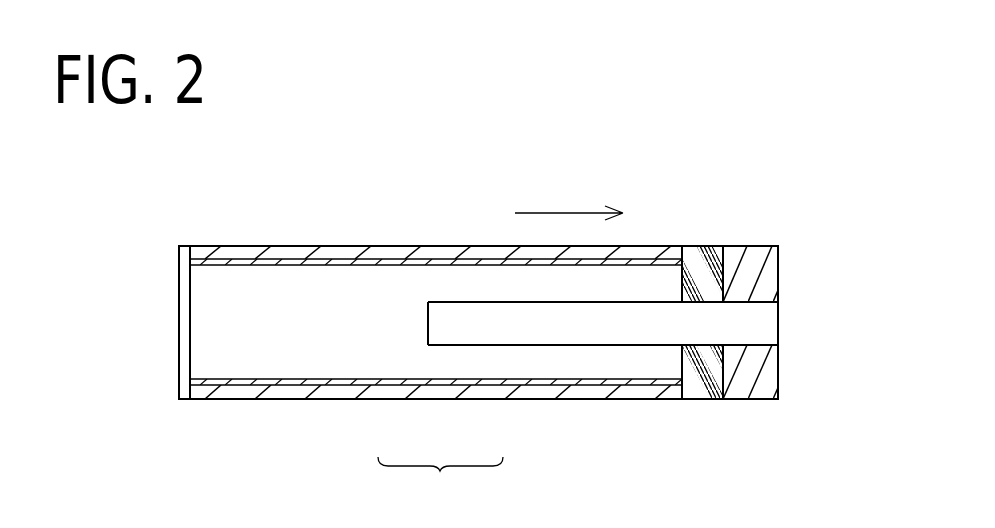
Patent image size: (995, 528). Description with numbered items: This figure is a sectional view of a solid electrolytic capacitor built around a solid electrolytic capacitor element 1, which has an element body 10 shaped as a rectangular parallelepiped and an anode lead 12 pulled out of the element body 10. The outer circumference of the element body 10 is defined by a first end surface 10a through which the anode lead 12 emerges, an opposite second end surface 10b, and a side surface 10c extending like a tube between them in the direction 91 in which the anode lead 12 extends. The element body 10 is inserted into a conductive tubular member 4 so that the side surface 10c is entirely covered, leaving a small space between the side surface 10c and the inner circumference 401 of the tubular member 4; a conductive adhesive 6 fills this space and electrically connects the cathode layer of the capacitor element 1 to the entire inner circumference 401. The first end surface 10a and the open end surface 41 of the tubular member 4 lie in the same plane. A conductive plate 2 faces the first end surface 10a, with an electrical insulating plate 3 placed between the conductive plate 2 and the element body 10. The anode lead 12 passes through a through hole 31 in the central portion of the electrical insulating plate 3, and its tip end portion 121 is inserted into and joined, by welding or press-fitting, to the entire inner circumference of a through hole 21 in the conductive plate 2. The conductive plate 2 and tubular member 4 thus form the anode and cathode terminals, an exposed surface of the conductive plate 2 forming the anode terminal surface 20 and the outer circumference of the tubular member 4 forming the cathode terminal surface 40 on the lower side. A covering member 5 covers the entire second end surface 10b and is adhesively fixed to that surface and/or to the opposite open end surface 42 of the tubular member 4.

The solid electrolytic capacitor element 1 is at (440, 480).
The conductive plate 2 is at (760, 255).
The electrical insulating plate 3 is at (718, 250).
The tubular member 4 is at (436, 223).
The covering member 5 is at (183, 314).
The conductive adhesive 6 is at (383, 257).
The element body 10 is at (388, 350).
The first end surface 10a is at (690, 379).
The second end surface 10b is at (182, 353).
The side surface 10c is at (436, 384).
The anode lead 12 is at (495, 325).
The anode terminal surface 20 is at (761, 407).
The through hole 21 is at (761, 310).
The through hole 31 is at (702, 311).
The cathode terminal surface 40 is at (632, 407).
The open end surface 41 is at (686, 251).
The open end surface 42 is at (182, 257).
The direction 91 is at (566, 211).
The tip end portion 121 is at (755, 356).
The inner circumference 401 is at (289, 375).